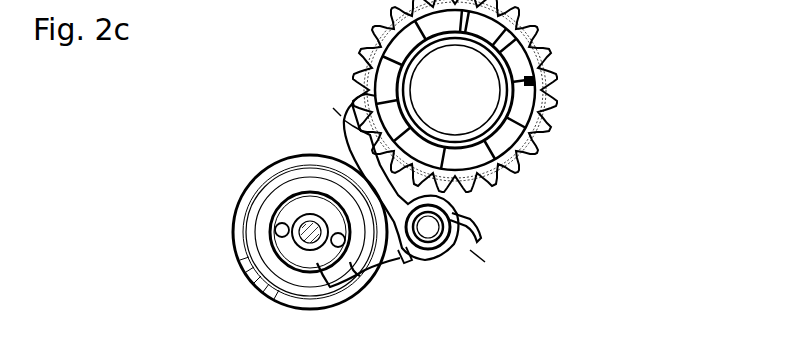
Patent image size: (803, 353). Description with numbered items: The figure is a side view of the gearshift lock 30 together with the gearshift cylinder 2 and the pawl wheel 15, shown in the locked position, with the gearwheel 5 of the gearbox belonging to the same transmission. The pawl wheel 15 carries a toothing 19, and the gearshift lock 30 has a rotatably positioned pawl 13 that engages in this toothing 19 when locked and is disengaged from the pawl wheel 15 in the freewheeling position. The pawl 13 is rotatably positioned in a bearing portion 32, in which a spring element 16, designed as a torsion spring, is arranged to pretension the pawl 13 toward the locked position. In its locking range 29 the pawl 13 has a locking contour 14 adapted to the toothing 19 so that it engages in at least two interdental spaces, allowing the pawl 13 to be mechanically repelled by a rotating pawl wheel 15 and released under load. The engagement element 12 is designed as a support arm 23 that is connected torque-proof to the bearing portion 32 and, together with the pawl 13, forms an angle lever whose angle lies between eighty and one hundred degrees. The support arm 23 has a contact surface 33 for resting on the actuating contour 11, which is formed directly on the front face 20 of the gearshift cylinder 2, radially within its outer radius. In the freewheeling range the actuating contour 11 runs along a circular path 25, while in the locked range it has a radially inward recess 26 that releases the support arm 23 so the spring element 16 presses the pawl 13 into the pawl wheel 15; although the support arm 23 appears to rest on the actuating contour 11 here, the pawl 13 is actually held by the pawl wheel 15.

The gearshift cylinder 2 is at (362, 188).
The gearwheel 5 is at (557, 96).
The actuating contour 11 is at (262, 297).
The engagement element 12 is at (333, 175).
The pawl 13 is at (357, 150).
The locking contour 14 is at (427, 125).
The pawl wheel 15 is at (522, 96).
The spring element 16 is at (465, 215).
The toothing of the pawl wheel 19 is at (333, 141).
The front face of the gearshift cylinder 20 is at (237, 254).
The support arm 23 is at (333, 155).
The circular path of the actuating contour 25 is at (250, 282).
The actuating contour recess 26 is at (331, 285).
The locking range 29 is at (336, 112).
The gearshift lock 30 is at (477, 262).
The bearing portion 32 is at (432, 245).
The contact surface 33 is at (270, 248).